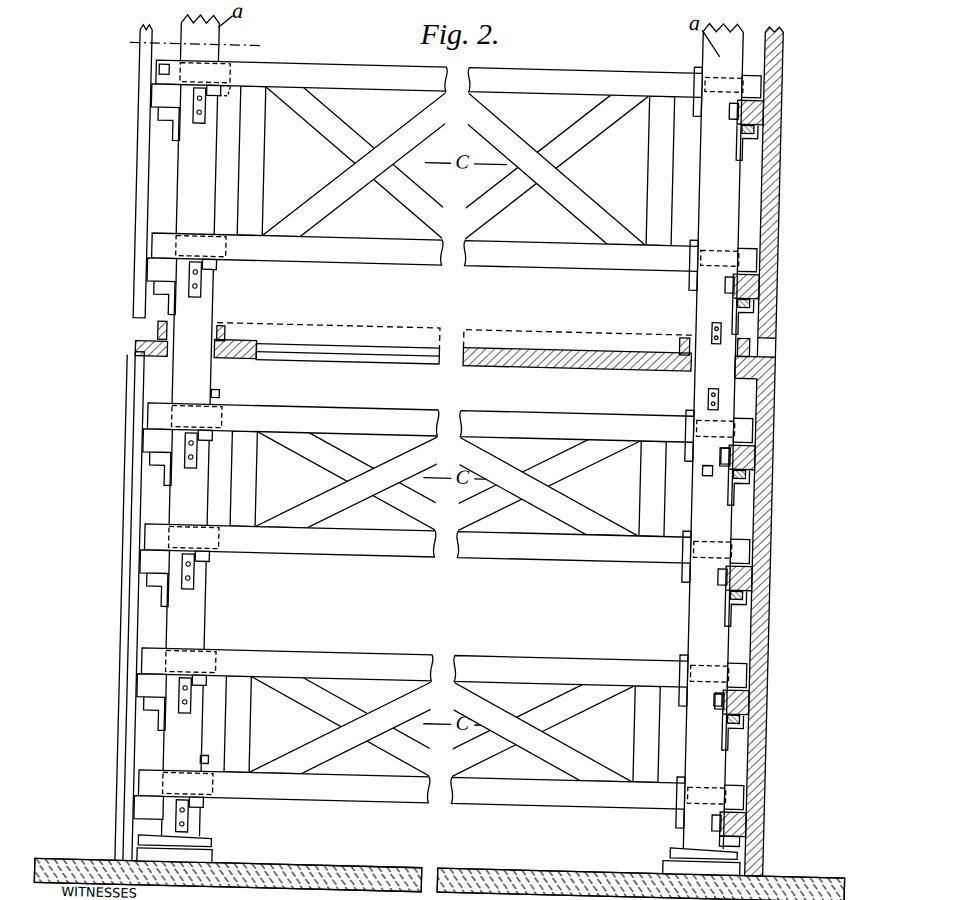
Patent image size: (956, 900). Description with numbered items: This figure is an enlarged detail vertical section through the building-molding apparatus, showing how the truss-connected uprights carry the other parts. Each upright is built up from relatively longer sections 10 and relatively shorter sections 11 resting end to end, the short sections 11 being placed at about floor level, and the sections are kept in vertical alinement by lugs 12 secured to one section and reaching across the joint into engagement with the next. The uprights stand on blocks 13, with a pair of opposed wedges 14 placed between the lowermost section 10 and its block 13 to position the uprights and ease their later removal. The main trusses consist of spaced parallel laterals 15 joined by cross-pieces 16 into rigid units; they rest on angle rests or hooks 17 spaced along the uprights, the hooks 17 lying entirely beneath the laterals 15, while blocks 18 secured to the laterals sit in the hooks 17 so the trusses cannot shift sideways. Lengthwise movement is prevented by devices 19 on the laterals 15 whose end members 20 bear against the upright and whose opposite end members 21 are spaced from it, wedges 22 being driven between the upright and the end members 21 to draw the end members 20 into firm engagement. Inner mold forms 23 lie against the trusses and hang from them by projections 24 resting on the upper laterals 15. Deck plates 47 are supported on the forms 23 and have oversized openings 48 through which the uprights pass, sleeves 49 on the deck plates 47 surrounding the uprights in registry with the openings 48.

The longer upright section 10 is at (698, 595).
The shorter upright section 11 is at (750, 342).
The lug 12 is at (710, 322).
The block 13 is at (222, 860).
The wedge 14 is at (113, 49).
The lateral 15 is at (150, 104).
The cross-piece 16 is at (640, 161).
The angle rest or hook 17 is at (194, 290).
The block 18 is at (200, 268).
The device 19 is at (212, 100).
The end member 20 is at (150, 79).
The end member 21 is at (215, 78).
The wedge 22 is at (216, 402).
The inner mold form 23 is at (132, 203).
The projection 24 is at (147, 252).
The deck plate 47 is at (322, 350).
The opening 48 is at (214, 362).
The sleeve 49 is at (222, 334).